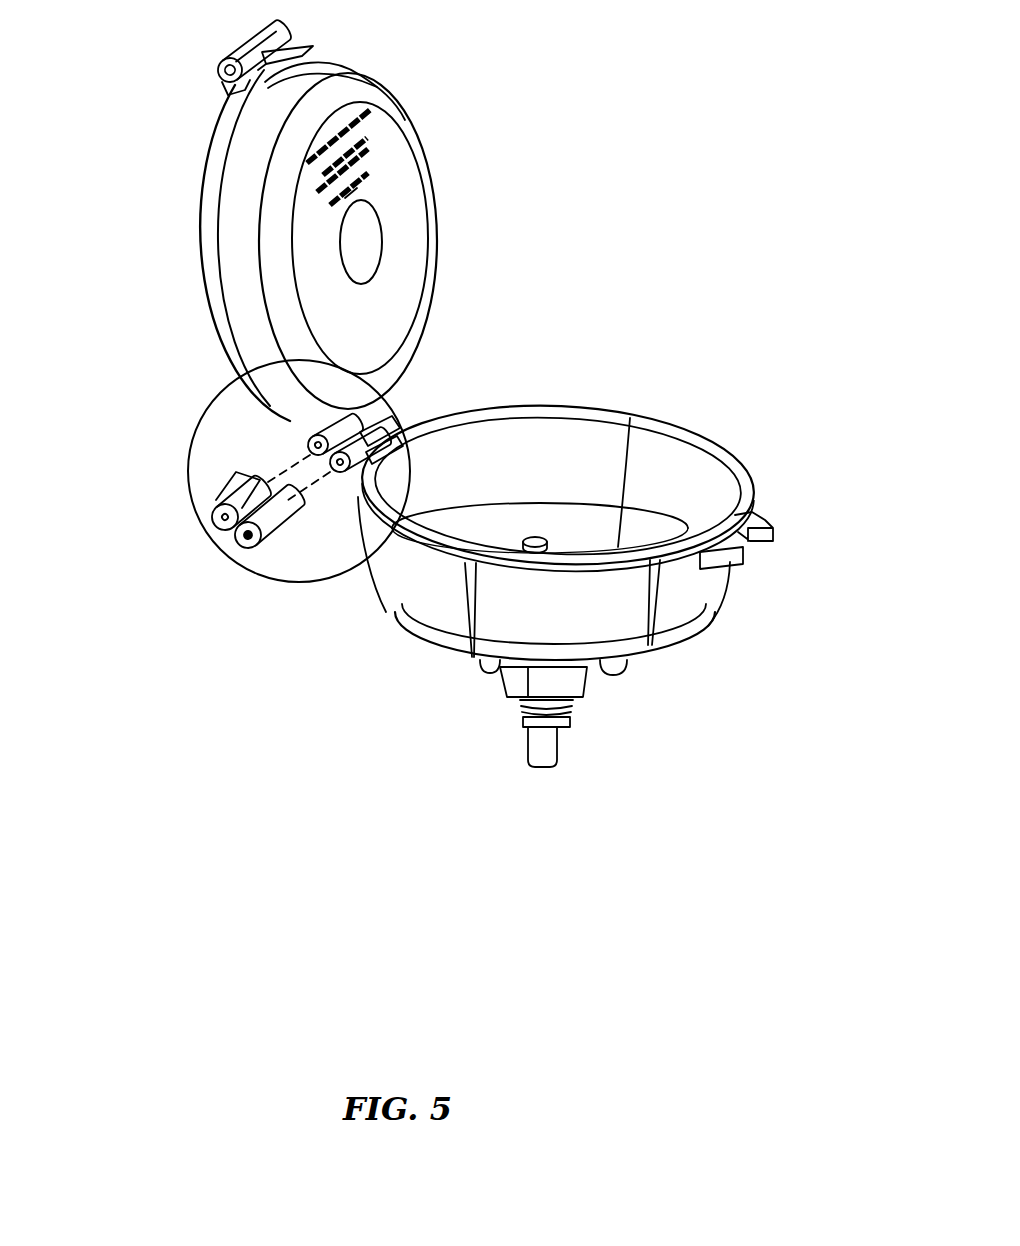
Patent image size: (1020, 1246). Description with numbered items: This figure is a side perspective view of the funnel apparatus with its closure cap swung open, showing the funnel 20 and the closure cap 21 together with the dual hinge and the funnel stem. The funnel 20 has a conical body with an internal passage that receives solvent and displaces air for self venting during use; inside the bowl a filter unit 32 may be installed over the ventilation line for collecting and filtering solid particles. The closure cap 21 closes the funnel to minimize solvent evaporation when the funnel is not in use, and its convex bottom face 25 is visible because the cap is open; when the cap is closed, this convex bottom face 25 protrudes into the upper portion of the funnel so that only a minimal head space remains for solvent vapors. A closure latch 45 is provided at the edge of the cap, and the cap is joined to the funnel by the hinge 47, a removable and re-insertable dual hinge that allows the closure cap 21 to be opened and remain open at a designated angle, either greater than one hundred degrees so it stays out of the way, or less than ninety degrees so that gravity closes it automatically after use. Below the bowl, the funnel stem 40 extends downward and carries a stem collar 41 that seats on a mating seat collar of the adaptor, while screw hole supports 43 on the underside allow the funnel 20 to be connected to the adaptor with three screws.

The funnel 20 is at (730, 600).
The closure cap 21 is at (190, 250).
The convex bottom face 25 is at (405, 170).
The filter unit 32 is at (535, 537).
The funnel stem 40 is at (557, 753).
The stem collar 41 is at (520, 710).
The screw hole support 43 is at (618, 677).
The closure latch 45 is at (235, 36).
The hinge 47 is at (236, 493).